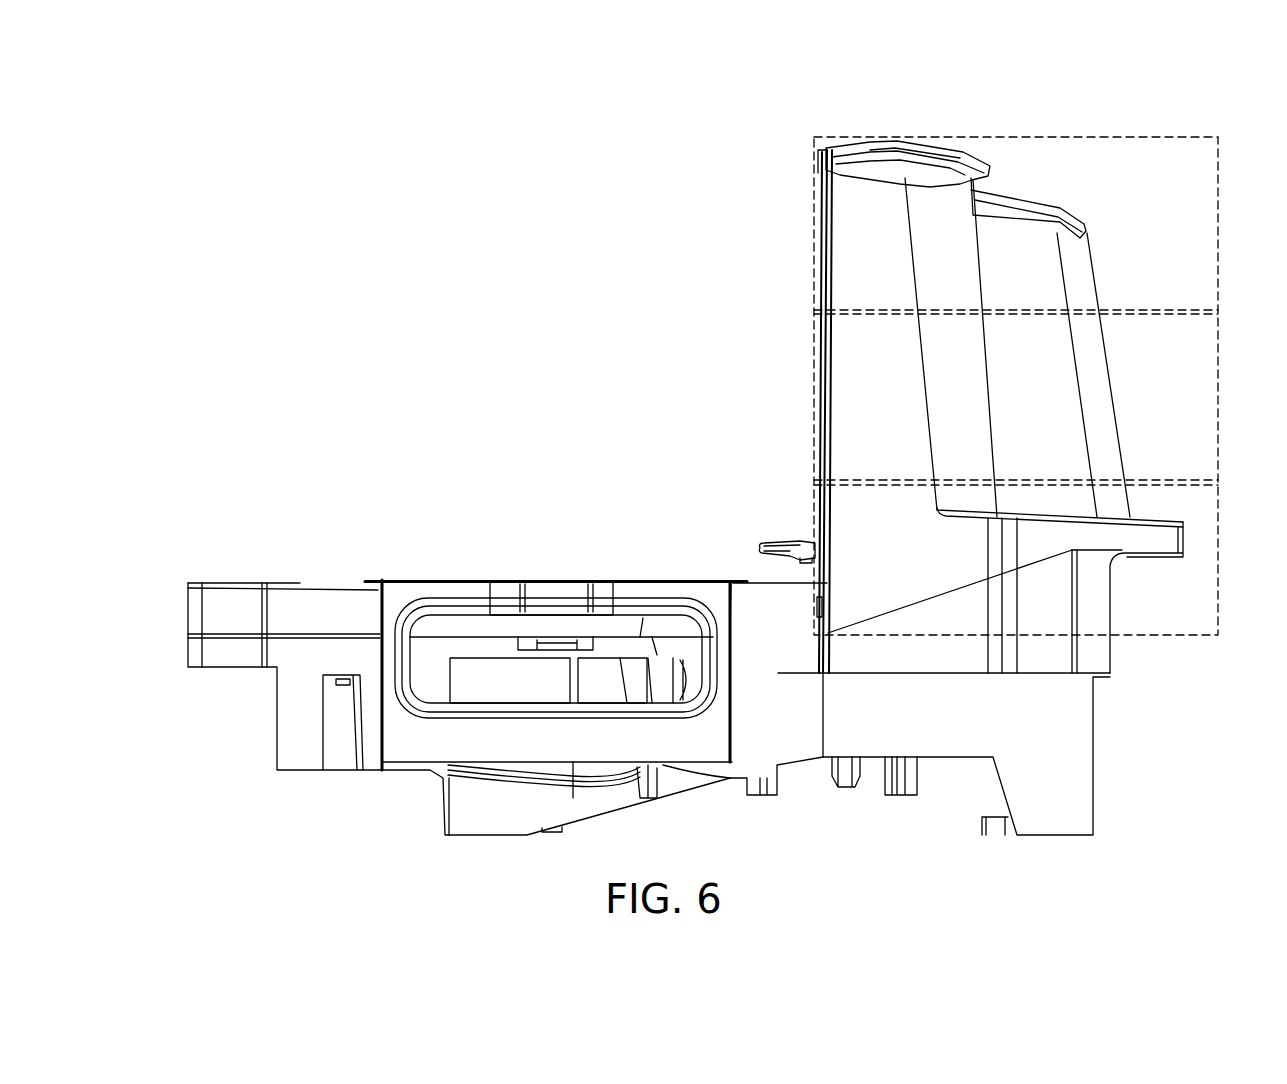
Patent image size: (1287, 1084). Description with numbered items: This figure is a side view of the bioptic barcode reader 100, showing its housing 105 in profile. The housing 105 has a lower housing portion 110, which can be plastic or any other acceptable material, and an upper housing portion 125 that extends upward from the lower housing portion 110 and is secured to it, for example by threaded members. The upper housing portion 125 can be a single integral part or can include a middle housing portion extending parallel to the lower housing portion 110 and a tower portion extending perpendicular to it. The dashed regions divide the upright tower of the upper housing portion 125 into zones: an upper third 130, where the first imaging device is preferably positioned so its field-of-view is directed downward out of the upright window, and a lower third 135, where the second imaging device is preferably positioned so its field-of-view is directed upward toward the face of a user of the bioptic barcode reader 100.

The bioptic barcode reader 100 is at (272, 222).
The housing 105 is at (1108, 692).
The lower housing portion 110 is at (1063, 800).
The upper housing portion 125 is at (1094, 596).
The upper third 130 is at (1014, 136).
The lower third 135 is at (1160, 640).